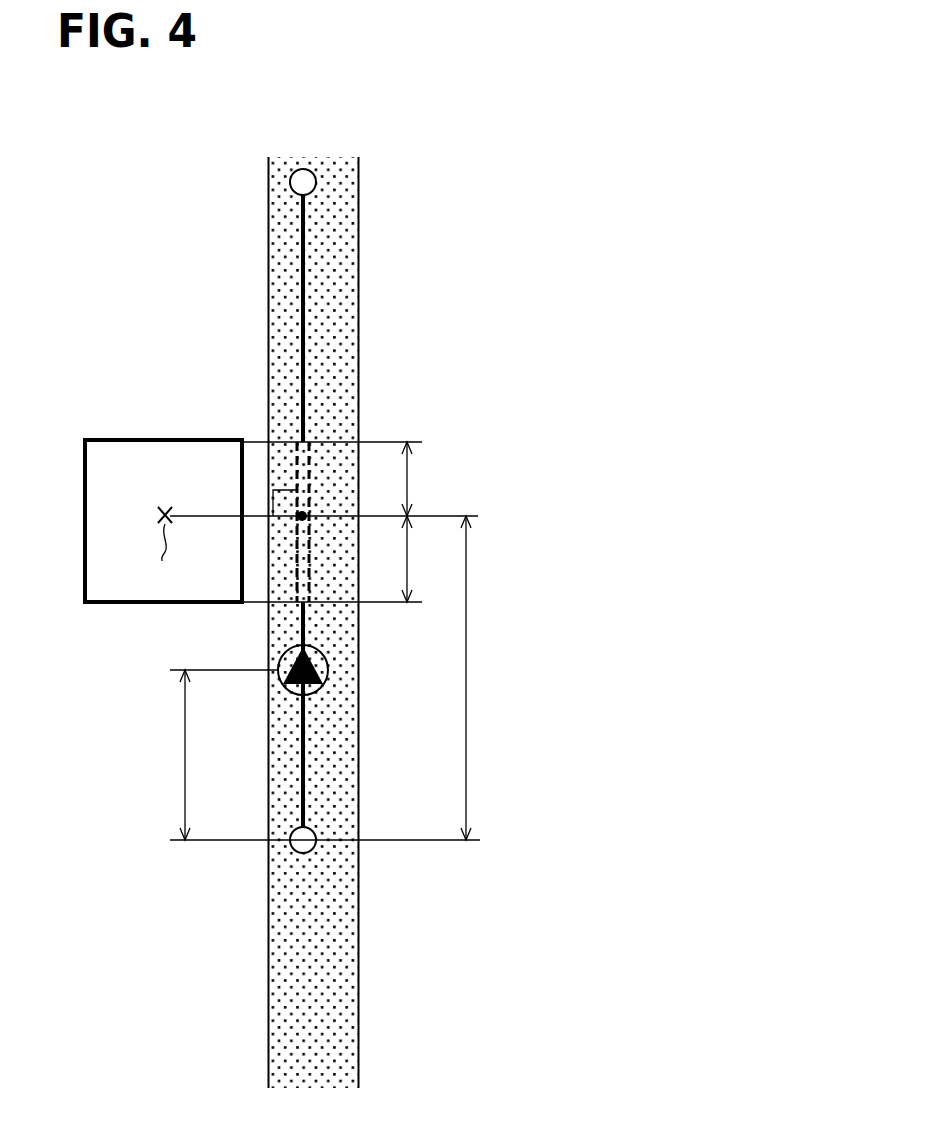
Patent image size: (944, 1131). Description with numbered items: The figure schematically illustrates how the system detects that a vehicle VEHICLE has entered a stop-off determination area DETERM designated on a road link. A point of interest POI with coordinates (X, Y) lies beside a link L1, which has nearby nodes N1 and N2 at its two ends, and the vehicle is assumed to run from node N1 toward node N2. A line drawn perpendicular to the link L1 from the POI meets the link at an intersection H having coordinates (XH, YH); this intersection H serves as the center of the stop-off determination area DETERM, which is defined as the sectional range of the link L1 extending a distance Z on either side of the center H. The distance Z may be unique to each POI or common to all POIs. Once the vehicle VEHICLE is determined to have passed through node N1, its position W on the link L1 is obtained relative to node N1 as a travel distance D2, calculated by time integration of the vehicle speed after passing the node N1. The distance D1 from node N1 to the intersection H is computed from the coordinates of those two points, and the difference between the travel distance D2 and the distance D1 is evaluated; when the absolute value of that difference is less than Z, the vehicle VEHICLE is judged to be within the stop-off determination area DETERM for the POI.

The link L1 is at (306, 284).
The nearby node N1 is at (308, 836).
The nearby node N2 is at (307, 187).
The intersection H is at (303, 514).
The element POI is at (163, 521).
The stop-off determination area DETERM is at (282, 448).
The distance Z is at (418, 522).
The vehicle VEHICLE is at (312, 694).
The position W is at (316, 653).
The distance D1 is at (828, 663).
The travel distance D2 is at (169, 755).